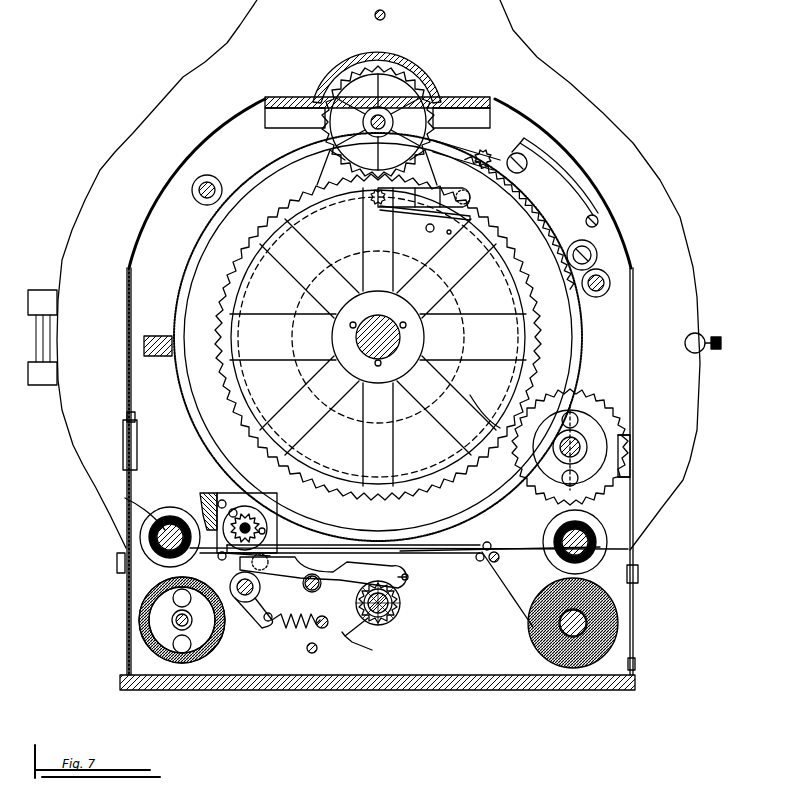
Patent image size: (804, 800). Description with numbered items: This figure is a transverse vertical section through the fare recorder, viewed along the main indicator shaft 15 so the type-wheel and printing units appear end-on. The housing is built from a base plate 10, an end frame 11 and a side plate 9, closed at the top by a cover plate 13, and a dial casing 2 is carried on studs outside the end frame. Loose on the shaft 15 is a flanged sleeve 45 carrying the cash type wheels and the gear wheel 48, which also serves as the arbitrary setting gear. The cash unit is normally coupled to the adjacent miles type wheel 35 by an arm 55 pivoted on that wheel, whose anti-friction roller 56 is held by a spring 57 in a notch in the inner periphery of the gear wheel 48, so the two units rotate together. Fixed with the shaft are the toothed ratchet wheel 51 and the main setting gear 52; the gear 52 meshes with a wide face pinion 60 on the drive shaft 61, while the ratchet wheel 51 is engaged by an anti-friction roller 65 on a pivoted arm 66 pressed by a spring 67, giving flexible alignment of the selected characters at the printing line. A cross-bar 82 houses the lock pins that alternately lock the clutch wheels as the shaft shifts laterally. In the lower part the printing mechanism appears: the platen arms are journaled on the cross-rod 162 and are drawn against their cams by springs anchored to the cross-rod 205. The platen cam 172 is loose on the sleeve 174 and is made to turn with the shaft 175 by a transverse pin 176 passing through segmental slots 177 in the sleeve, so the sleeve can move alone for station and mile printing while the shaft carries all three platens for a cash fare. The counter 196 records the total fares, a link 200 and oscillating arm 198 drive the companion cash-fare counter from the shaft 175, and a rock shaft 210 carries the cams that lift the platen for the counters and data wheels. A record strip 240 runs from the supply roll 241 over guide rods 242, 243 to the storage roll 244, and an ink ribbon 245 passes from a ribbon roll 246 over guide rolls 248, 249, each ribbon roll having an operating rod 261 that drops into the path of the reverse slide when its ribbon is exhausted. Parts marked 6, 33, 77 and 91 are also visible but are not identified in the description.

The dial casing 2 is at (698, 332).
The side wall 6 is at (633, 330).
The side plate 9 is at (126, 336).
The base plate 10 is at (250, 656).
The end frame 11 is at (625, 493).
The cover plate 13 is at (420, 85).
The main indicator shaft 15 is at (390, 343).
The hub 33 is at (392, 348).
The "miles" type wheel 35 is at (445, 140).
The flanged sleeve 45 is at (340, 110).
The gear wheel 48 is at (340, 198).
The toothed ratchet wheel 51 is at (540, 222).
The setting gear 52 is at (515, 395).
The arm 55 is at (450, 188).
The anti-friction roller 56 is at (372, 200).
The spring 57 is at (395, 212).
The wide face pinion 60 is at (598, 400).
The drive shaft 61 is at (580, 440).
The anti-friction roller 65 is at (488, 148).
The pivoted arm 66 is at (590, 248).
The spring 67 is at (580, 200).
The screw 77 is at (385, 14).
The cross-bar 82 is at (158, 352).
The shaft 91 is at (382, 115).
The cross-rod 162 is at (311, 592).
The platen cam 172 is at (398, 610).
The sleeve 174 is at (360, 593).
The shaft 175 is at (398, 590).
The transverse pin 176 is at (380, 622).
The segmental slots 177 is at (392, 598).
The consecutive numbering printing counter 196 is at (258, 512).
The oscillating arm 198 is at (272, 540).
The link 200 is at (293, 574).
The cross-rod 205 is at (308, 650).
The rock shaft 210 is at (243, 600).
The record strip 240 is at (508, 607).
The supply roll 241 is at (605, 595).
The guide rod 242 is at (478, 560).
The guide rod 243 is at (226, 560).
The storage roll 244 is at (138, 620).
The ink ribbon 245 is at (525, 548).
The ribbon roll 246 is at (125, 505).
The guide roll 248 is at (499, 560).
The guide roll 249 is at (210, 492).
The operating rod 261 is at (165, 520).